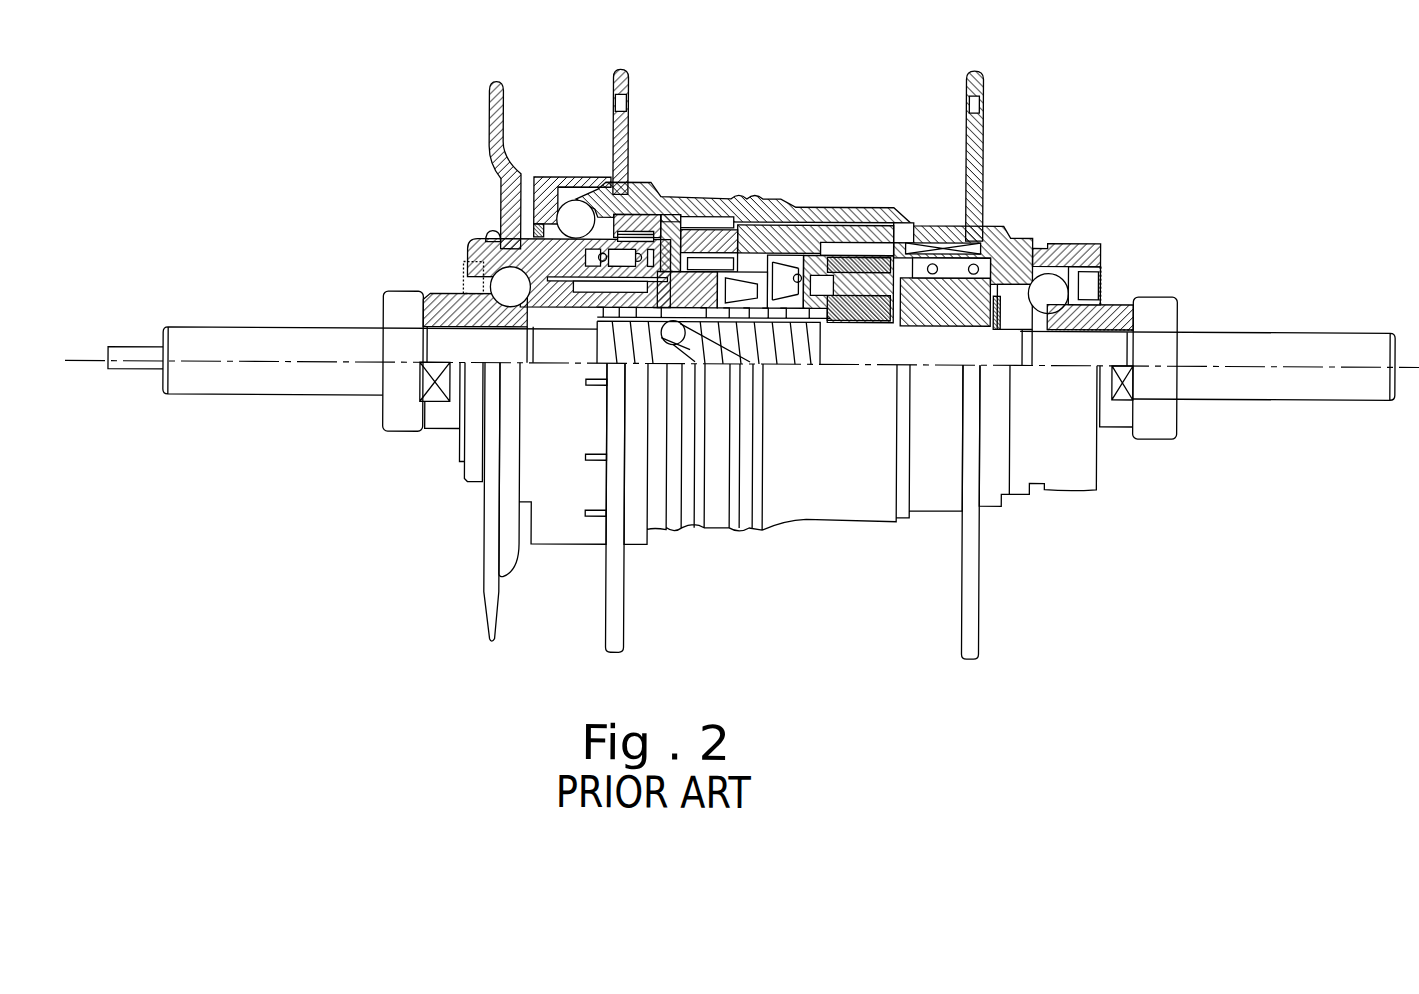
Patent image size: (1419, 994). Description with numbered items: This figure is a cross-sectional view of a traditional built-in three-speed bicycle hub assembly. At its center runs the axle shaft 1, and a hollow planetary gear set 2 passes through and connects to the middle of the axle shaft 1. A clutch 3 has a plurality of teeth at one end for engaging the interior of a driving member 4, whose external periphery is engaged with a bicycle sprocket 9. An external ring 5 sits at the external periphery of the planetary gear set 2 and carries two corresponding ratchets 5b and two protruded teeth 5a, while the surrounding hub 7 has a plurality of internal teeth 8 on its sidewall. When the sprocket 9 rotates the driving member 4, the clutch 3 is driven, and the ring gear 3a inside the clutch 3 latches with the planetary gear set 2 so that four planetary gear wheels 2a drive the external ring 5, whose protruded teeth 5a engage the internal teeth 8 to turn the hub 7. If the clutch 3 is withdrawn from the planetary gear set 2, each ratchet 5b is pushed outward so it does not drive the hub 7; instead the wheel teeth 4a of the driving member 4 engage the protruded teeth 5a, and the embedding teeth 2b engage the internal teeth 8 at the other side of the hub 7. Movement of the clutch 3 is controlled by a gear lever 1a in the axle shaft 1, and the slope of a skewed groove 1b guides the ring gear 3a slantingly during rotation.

The axle shaft 1 is at (288, 345).
The gear lever 1a is at (120, 357).
The skewed groove 1b is at (703, 357).
The planetary gear set 2 is at (990, 290).
The planetary gear wheels 2a is at (868, 248).
The embedding teeth 2b is at (982, 227).
The clutch 3 is at (561, 275).
The ring gear 3a is at (697, 272).
The driving member 4 is at (470, 257).
The wheel teeth 4a is at (607, 181).
The external ring 5 is at (780, 235).
The protruded teeth 5a is at (622, 247).
The ratchets 5b is at (700, 224).
The hub 7 is at (850, 207).
The internal teeth 8 is at (693, 198).
The bicycle sprocket 9 is at (490, 117).